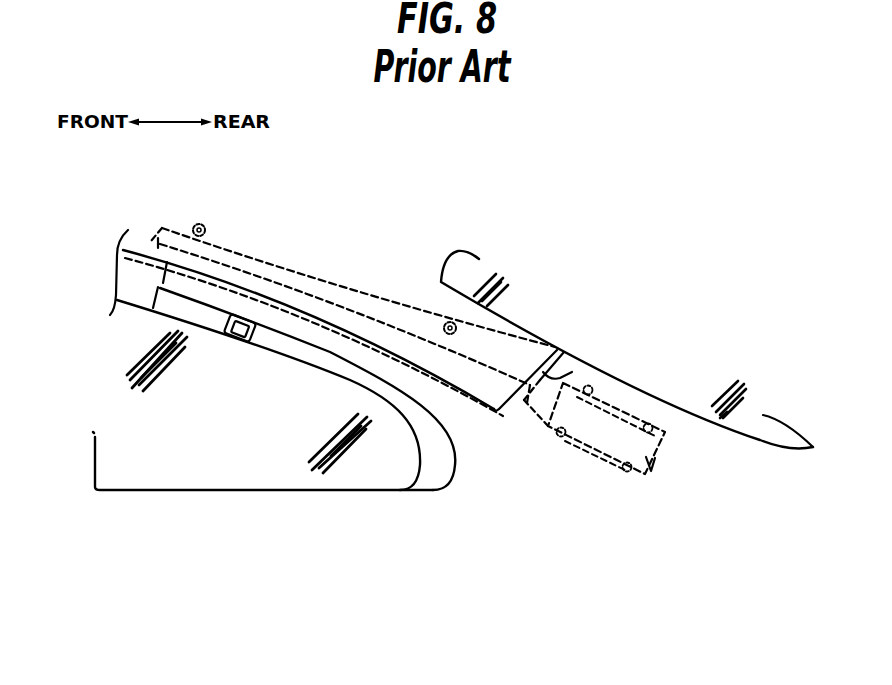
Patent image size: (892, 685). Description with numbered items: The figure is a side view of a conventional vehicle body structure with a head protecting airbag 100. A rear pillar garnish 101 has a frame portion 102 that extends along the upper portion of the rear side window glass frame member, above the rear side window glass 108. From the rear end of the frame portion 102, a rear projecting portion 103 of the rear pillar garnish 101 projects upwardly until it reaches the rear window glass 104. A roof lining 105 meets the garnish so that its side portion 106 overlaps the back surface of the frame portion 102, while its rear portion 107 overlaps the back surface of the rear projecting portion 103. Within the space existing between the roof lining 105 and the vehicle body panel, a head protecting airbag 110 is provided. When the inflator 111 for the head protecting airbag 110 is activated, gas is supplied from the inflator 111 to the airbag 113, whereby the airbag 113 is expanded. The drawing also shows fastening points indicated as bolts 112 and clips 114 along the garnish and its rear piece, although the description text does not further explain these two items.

The vehicle body structure with a head protecting airbag 100 is at (598, 190).
The rear pillar garnish 101 is at (480, 572).
The frame portion 102 is at (320, 346).
The rear projecting portion 103 is at (537, 423).
The rear window glass 104 is at (582, 337).
The roof lining 105 is at (344, 233).
The side portion 106 is at (310, 319).
The rear portion 107 is at (586, 368).
The rear side window glass 108 is at (190, 472).
The head protecting airbag 110 is at (377, 292).
The inflator 111 is at (650, 472).
The bolt 112 is at (653, 423).
The airbag 113 is at (238, 269).
The clip 114 is at (202, 228).